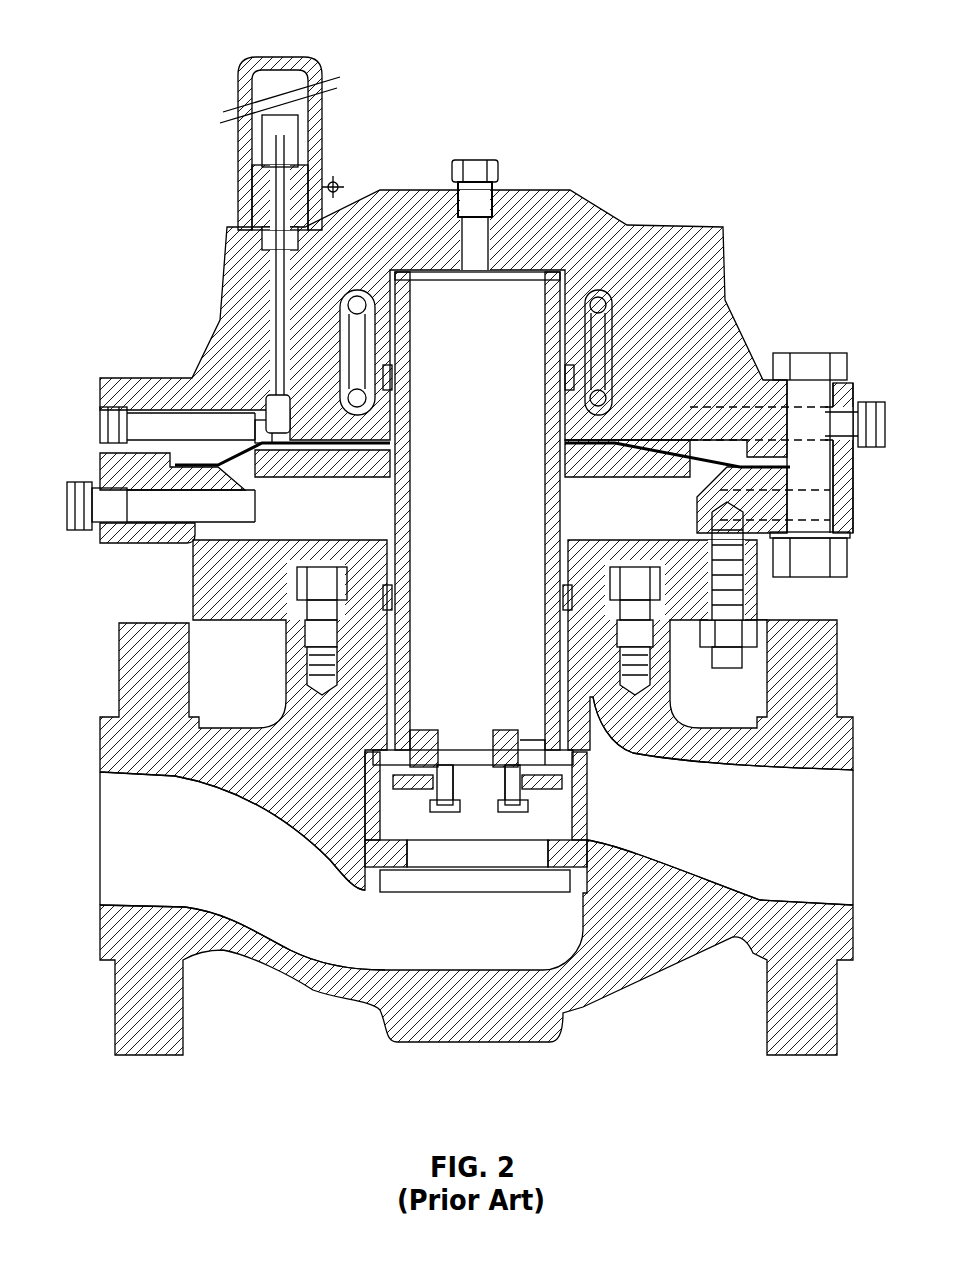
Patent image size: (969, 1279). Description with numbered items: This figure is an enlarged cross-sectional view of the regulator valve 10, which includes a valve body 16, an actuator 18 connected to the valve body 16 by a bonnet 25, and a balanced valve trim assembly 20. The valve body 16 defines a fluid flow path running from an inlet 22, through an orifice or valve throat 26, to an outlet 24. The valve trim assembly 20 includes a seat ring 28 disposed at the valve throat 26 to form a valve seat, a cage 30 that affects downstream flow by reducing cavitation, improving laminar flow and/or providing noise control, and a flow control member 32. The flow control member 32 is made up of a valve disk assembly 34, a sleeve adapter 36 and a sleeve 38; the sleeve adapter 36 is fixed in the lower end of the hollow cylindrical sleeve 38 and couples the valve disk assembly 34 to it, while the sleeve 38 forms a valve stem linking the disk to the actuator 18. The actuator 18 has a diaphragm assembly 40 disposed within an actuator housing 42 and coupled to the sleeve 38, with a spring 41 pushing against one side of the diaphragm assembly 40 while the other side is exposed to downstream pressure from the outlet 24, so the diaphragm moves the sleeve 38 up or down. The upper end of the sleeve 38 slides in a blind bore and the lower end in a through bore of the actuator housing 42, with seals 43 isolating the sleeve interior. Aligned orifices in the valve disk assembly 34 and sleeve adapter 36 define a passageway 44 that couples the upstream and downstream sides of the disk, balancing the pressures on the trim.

The regulator valve 10 is at (131, 42).
The valve body 16 is at (130, 1017).
The actuator 18 is at (735, 322).
The balanced valve trim assembly 20 is at (418, 870).
The inlet 22 is at (200, 847).
The outlet 24 is at (757, 838).
The bonnet 25 is at (762, 613).
The valve throat 26 is at (380, 878).
The seat ring 28 is at (383, 853).
The cage 30 is at (367, 800).
The flow control member 32 is at (390, 645).
The valve disk assembly 34 is at (568, 775).
The sleeve adapter 36 is at (538, 742).
The sleeve 38 is at (403, 272).
The diaphragm assembly 40 is at (303, 455).
The spring 41 is at (598, 375).
The actuator housing 42 is at (112, 393).
The seals 43 is at (612, 628).
The passageway 44 is at (478, 740).